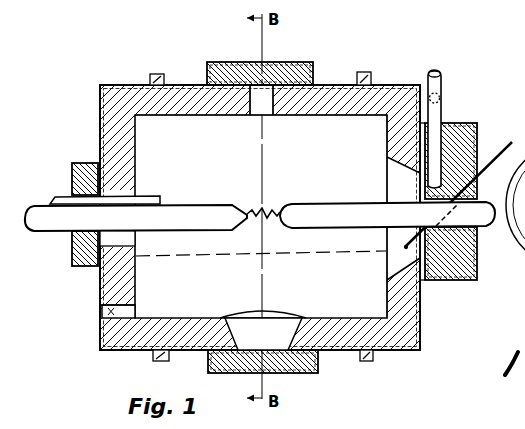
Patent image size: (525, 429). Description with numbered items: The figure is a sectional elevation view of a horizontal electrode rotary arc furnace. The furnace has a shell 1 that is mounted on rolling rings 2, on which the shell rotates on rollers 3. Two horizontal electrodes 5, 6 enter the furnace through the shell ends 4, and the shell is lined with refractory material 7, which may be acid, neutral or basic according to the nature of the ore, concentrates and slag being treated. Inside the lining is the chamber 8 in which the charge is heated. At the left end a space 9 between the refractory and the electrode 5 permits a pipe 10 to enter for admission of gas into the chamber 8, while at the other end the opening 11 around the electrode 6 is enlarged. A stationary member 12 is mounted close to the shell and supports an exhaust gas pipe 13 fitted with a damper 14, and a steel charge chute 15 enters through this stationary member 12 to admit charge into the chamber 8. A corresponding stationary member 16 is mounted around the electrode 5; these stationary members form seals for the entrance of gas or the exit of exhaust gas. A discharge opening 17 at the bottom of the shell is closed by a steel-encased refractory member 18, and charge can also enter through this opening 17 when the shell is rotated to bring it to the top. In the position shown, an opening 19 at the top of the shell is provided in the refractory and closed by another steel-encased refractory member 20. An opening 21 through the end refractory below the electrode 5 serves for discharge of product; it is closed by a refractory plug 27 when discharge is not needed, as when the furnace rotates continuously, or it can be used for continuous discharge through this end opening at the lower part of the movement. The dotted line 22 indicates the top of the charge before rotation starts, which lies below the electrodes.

The shell 1 is at (334, 85).
The rolling rings 2 is at (154, 75).
The rollers 3 is at (515, 259).
The shell ends 4 is at (92, 297).
The electrode 5 is at (186, 224).
The electrode 6 is at (345, 224).
The refractory material 7 is at (385, 132).
The chamber 8 is at (216, 158).
The space 9 is at (128, 240).
The pipe 10 is at (140, 197).
The bore 11 is at (392, 188).
The stationary member 12 is at (457, 283).
The exhaust gas pipe 13 is at (442, 82).
The damper 14 is at (446, 98).
The steel charge chute 15 is at (497, 142).
The stationary member 16 is at (75, 170).
The discharge opening 17 is at (244, 318).
The steel-encased refractory member 18 is at (298, 373).
The opening 19 is at (265, 107).
The refractory member 20 is at (283, 62).
The opening 21 is at (135, 311).
The dotted line 22 is at (213, 254).
The refractory plug 27 is at (102, 312).